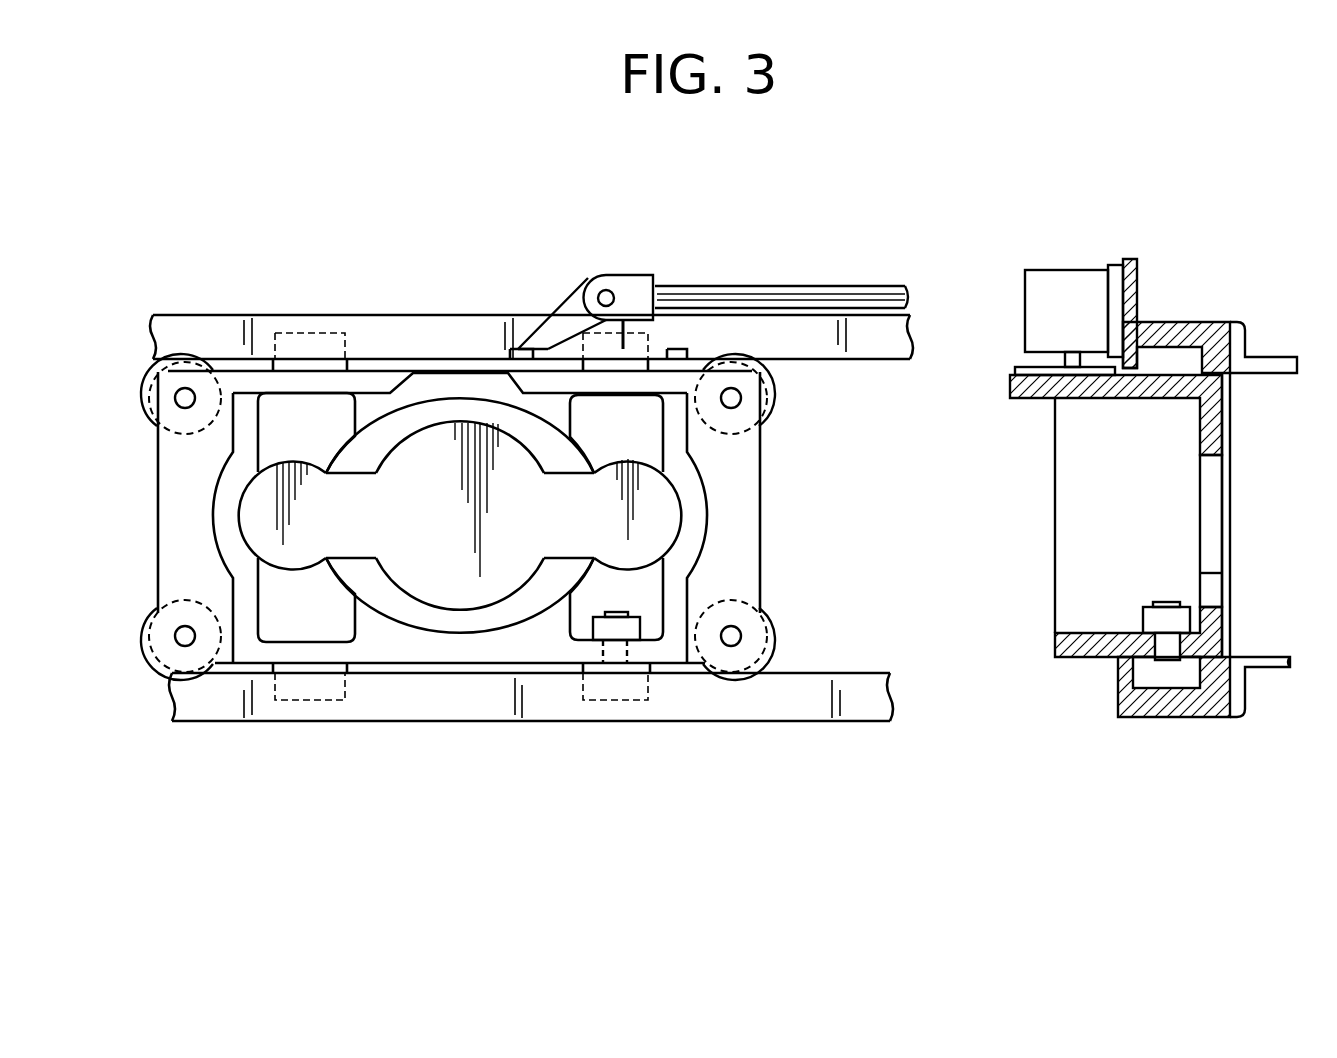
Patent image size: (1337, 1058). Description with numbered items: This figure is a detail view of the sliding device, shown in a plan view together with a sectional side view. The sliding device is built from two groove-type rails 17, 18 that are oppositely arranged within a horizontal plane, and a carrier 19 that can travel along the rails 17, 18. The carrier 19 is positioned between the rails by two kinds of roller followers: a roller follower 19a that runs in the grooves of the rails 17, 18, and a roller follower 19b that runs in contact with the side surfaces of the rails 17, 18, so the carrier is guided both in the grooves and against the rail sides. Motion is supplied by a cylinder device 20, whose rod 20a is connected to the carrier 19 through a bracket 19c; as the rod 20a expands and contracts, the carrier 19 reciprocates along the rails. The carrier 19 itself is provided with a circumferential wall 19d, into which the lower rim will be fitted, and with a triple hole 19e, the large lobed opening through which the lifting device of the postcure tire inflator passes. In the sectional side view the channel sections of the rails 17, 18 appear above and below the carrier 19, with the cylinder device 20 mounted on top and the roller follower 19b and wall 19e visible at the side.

The groove-type rail 17 is at (553, 702).
The groove-type rail 18 is at (722, 330).
The carrier 19 is at (760, 534).
The roller follower 19a is at (650, 700).
The roller follower 19b is at (768, 652).
The bracket 19c is at (583, 272).
The circumferential wall 19d is at (452, 622).
The triple hole 19e is at (414, 583).
The cylinder device 20 is at (1023, 300).
The rod 20a is at (840, 284).